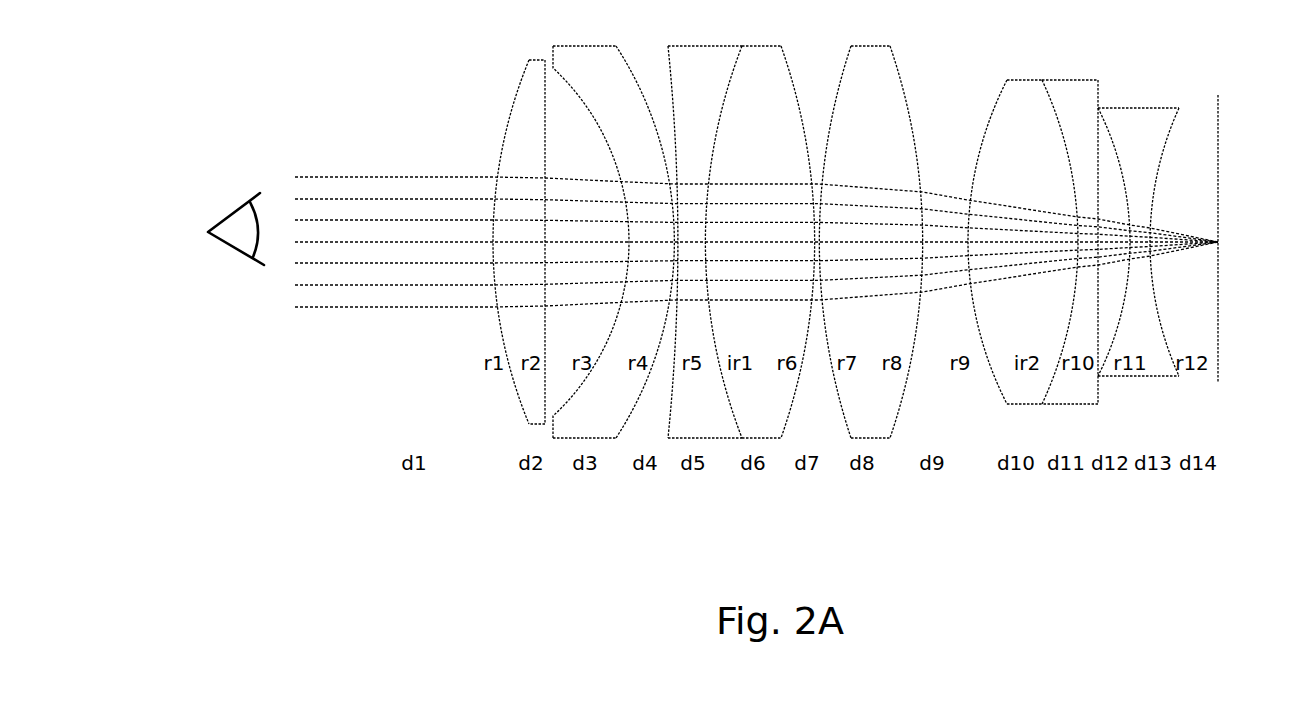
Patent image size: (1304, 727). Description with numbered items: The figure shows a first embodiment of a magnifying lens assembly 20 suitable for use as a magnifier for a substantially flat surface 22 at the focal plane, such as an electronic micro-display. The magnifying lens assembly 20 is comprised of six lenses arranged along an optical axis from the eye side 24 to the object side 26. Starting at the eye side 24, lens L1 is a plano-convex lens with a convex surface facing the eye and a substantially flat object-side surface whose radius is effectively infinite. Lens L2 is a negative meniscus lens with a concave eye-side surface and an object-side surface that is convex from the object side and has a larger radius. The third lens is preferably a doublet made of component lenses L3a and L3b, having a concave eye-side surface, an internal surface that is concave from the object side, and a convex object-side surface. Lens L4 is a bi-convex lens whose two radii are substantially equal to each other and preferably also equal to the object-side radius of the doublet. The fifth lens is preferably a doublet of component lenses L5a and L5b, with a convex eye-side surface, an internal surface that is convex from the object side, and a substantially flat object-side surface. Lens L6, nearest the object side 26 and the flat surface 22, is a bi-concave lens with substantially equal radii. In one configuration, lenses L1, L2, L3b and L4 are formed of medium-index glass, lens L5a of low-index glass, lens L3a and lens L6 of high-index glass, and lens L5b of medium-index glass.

The magnifying lens assembly 20 is at (242, 123).
The substantially flat surface 22 is at (1218, 170).
The eye side 24 is at (756, 220).
The object side 26 is at (1190, 211).
The lens L1 is at (519, 213).
The lens L2 is at (613, 220).
The component lens L3a is at (705, 220).
The component lens L3b is at (778, 220).
The lens L4 is at (870, 220).
The component lens L5a is at (1023, 228).
The component lens L5b is at (1070, 228).
The lens L6 is at (1138, 214).